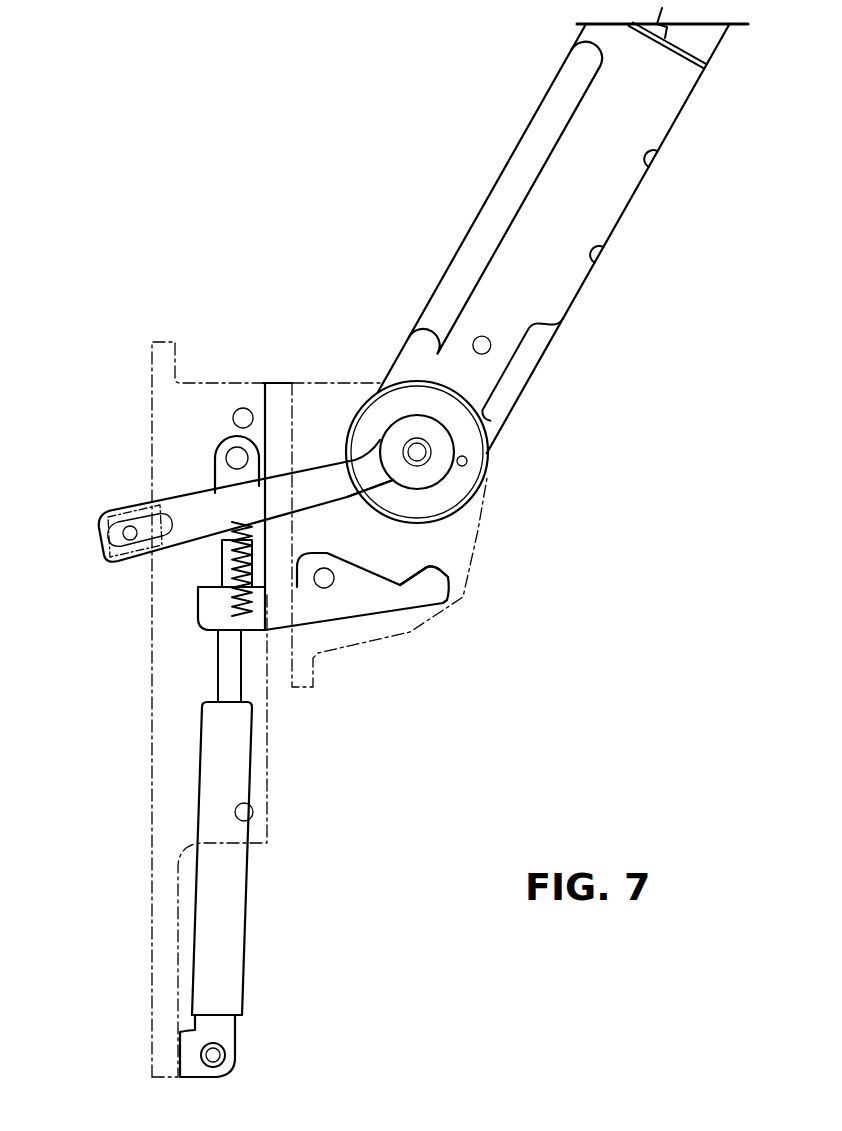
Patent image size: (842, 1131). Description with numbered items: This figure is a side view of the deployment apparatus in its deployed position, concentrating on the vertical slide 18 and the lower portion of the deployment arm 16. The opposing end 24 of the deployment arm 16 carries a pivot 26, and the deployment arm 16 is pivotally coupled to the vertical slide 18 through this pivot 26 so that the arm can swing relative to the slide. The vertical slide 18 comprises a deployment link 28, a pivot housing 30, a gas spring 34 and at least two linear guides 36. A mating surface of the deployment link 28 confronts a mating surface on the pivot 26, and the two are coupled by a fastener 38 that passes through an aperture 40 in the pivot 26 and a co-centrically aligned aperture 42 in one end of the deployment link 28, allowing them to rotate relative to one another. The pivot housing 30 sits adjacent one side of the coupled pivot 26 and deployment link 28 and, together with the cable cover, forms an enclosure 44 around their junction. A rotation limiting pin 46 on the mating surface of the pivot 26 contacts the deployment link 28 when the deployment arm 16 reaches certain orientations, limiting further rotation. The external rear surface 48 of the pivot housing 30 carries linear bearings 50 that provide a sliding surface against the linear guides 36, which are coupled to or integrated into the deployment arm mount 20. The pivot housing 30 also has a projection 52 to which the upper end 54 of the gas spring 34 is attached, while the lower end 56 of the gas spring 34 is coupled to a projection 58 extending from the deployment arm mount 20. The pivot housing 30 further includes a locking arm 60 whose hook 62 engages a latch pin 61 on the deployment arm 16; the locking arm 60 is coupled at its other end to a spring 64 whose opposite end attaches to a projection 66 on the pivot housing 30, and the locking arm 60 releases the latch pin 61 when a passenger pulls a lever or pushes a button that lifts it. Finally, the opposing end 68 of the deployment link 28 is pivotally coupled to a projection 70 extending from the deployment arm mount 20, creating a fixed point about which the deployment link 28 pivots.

The deployment arm 16 is at (653, 95).
The vertical slide 18 is at (122, 654).
The deployment arm mount 20 is at (152, 855).
The opposing end 24 is at (488, 463).
The pivot 26 is at (487, 453).
The deployment link 28 is at (330, 488).
The pivot housing 30 is at (360, 380).
The gas spring 34 is at (200, 738).
The linear guides 36 is at (259, 388).
The fastener 38 is at (420, 454).
The aperture 40 is at (425, 459).
The aperture 42 is at (422, 457).
The enclosure 44 is at (322, 410).
The rotation limiting pin 46 is at (490, 450).
The external rear surface 48 is at (287, 447).
The linear bearings 50 is at (213, 542).
The projection 52 is at (222, 440).
The upper end 54 is at (227, 447).
The lower end 56 is at (203, 1052).
The projection 58 is at (190, 1060).
The locking arm 60 is at (353, 587).
The latch pin 61 is at (483, 350).
The hook 62 is at (437, 583).
The spring 64 is at (247, 567).
The projection 66 is at (213, 523).
The opposing end 68 is at (100, 525).
The projection 70 is at (113, 510).